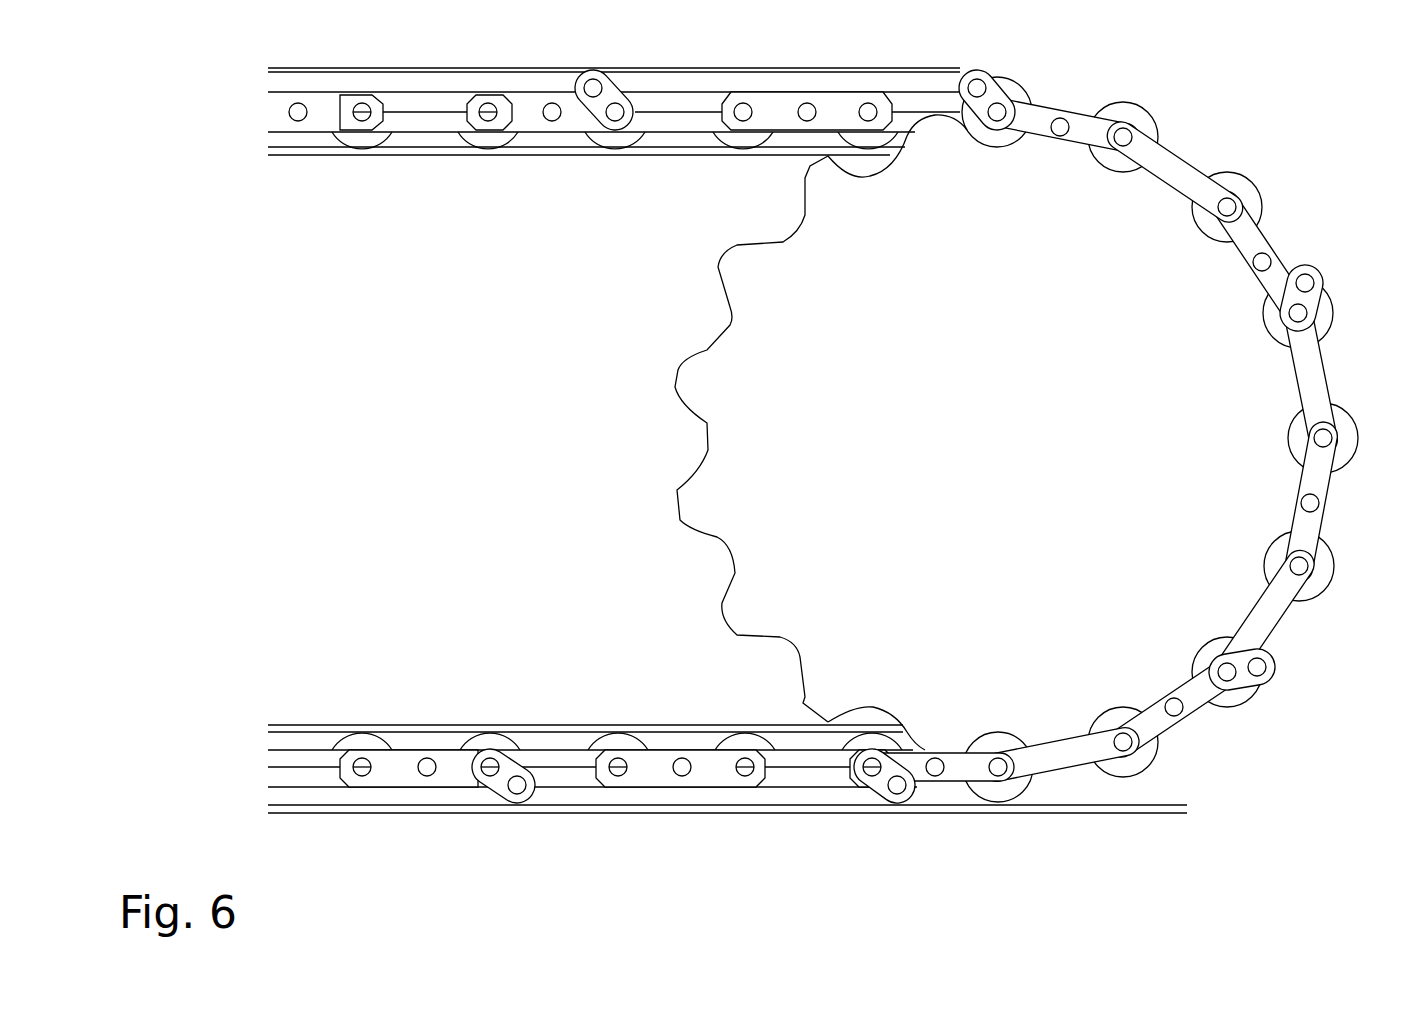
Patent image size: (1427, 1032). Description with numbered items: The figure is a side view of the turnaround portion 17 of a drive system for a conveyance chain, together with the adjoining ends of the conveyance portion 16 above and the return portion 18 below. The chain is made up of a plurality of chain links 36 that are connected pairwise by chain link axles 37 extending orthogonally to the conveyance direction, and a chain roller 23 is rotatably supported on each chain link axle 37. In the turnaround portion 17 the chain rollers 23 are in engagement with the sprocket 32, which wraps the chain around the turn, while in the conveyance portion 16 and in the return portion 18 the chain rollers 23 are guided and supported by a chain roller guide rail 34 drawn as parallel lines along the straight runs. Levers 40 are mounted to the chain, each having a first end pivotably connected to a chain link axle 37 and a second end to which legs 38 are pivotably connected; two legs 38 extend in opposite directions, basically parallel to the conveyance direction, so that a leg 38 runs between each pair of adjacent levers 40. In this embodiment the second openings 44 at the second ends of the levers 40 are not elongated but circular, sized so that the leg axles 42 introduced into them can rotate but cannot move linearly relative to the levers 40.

The conveyance portion 16 is at (478, 240).
The turnaround portion 17 is at (1313, 142).
The return portion 18 is at (432, 670).
The chain roller 23 is at (480, 140).
The sprocket 32 is at (660, 450).
The chain roller guide rail 34 is at (385, 156).
The chain link 36 is at (325, 120).
The chain link axle 37 is at (488, 108).
The leg 38 is at (713, 88).
The lever 40 is at (615, 100).
The leg axle 42 is at (897, 790).
The second opening 44 is at (593, 88).